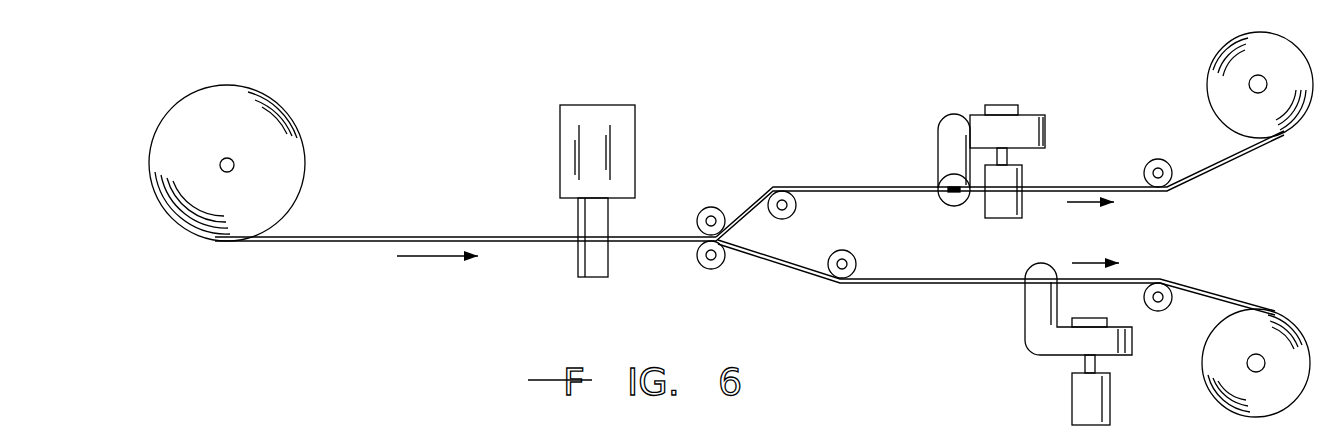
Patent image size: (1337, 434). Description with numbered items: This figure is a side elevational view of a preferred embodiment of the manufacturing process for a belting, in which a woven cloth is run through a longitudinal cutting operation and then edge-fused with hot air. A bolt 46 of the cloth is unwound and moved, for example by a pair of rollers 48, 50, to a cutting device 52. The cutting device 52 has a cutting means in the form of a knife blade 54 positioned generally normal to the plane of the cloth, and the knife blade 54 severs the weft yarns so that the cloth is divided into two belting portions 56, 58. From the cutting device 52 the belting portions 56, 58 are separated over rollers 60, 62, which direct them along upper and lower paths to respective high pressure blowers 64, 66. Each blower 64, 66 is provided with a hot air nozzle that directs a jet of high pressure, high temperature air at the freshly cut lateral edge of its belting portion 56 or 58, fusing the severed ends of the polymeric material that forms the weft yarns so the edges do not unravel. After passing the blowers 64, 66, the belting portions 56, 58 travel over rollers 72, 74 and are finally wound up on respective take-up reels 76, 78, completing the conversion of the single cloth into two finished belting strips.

The bolt of cloth 46 is at (303, 139).
The roller 48 is at (700, 212).
The roller 50 is at (712, 269).
The cutting device 52 is at (637, 115).
The knife blade 54 is at (578, 258).
The belting portion 56 is at (853, 187).
The belting portion 58 is at (772, 263).
The roller 60 is at (800, 200).
The roller 62 is at (845, 280).
The high pressure blower 64 is at (1032, 113).
The high pressure blower 66 is at (1027, 352).
The roller 72 is at (1160, 158).
The roller 74 is at (1172, 303).
The take-up reel 76 is at (1233, 67).
The take-up reel 78 is at (1278, 350).